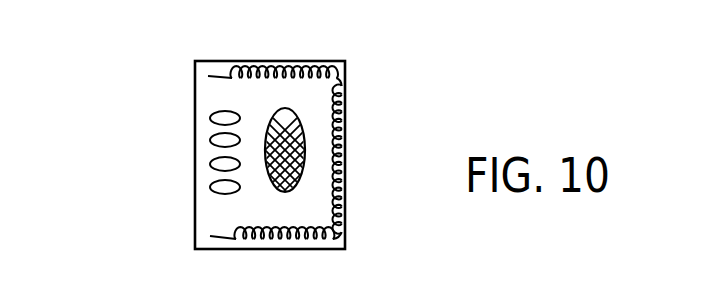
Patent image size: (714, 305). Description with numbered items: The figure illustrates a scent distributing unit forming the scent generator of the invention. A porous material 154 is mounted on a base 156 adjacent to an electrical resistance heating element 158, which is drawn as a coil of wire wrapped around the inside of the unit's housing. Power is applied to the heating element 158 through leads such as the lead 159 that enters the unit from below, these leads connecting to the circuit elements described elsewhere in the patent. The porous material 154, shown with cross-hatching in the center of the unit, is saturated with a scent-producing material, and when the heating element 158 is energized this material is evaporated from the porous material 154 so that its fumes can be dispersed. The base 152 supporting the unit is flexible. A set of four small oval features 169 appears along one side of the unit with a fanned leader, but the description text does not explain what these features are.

The base 152 is at (217, 43).
The porous material 154 is at (300, 120).
The base 156 is at (346, 61).
The electrical resistance heating element 158 is at (340, 147).
The lead 159 is at (222, 237).
The contact pads 169 is at (210, 119).